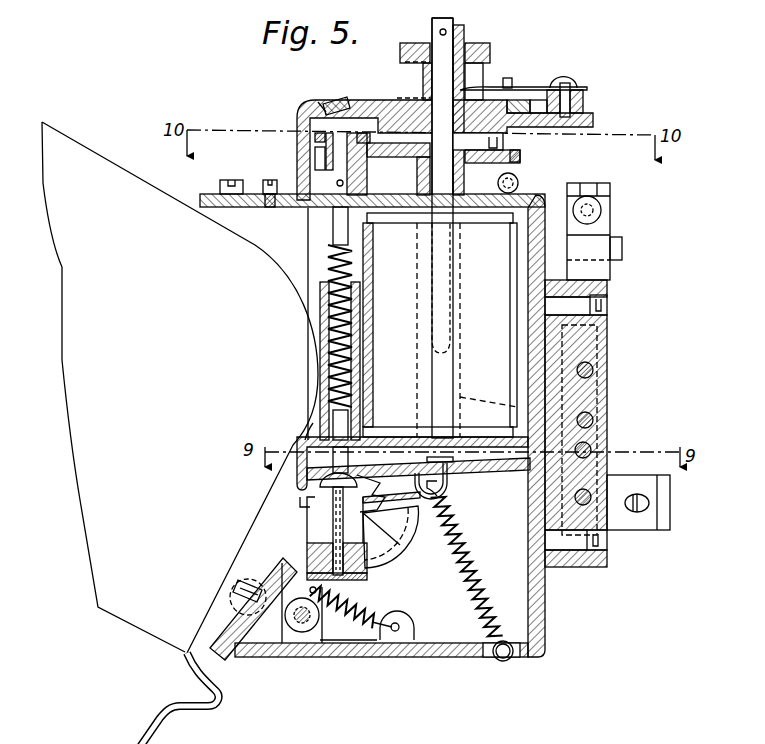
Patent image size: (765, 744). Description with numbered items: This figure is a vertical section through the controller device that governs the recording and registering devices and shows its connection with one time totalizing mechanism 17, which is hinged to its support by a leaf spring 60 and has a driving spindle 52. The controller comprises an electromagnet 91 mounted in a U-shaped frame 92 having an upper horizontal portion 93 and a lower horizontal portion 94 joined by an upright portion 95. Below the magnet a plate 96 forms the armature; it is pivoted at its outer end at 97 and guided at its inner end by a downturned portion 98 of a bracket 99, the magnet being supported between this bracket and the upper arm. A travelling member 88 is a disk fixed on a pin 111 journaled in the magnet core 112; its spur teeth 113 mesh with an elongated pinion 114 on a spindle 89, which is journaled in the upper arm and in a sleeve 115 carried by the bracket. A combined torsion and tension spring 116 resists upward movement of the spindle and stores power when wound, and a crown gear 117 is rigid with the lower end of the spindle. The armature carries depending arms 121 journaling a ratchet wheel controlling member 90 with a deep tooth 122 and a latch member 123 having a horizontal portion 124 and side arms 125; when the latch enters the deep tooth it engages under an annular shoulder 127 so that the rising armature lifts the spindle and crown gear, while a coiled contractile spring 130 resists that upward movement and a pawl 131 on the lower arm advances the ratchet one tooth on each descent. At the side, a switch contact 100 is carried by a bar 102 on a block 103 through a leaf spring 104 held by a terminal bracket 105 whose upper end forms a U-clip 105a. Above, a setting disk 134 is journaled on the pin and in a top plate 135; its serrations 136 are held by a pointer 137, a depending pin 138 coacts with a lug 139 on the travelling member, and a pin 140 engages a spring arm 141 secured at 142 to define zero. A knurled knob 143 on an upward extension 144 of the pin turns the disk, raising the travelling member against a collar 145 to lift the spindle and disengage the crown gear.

The time totalizing mechanism 17 is at (180, 387).
The leaf spring 60 is at (207, 710).
The driving spindle 52 is at (267, 587).
The travelling member 88 is at (508, 149).
The spindle 89 is at (340, 212).
The controlling member 90 is at (308, 508).
The electromagnet 91 is at (490, 380).
The U-shaped frame 92 is at (515, 650).
The upper horizontal portion of frame 93 is at (247, 210).
The lower horizontal portion of frame 94 is at (443, 655).
The upright portion of frame 95 is at (542, 612).
The armature plate 96 is at (463, 473).
The pivot of armature plate 97 is at (530, 468).
The downturned portion of bracket 98 is at (297, 458).
The bracket 99 is at (312, 423).
The contact 100 is at (605, 210).
The bar 102 is at (600, 230).
The block 103 is at (600, 340).
The leaf spring 104 is at (608, 302).
The terminal bracket 105 is at (655, 503).
The U-clip 105a is at (625, 250).
The pin 111 is at (470, 78).
The core 112 is at (600, 405).
The spur teeth 113 is at (518, 160).
The elongated pinion 114 is at (315, 157).
The sleeve 115 is at (323, 410).
The combined torsion and tension spring 116 is at (327, 353).
The crown gear 117 is at (367, 574).
The depending arms 121 is at (377, 492).
The deep tooth 122 is at (378, 513).
The latch member 123 is at (392, 542).
The horizontal portion of latch member 124 is at (450, 505).
The side arms of latch member 125 is at (397, 540).
The annular shoulder 127 is at (317, 487).
The coiled contractile spring 130 is at (465, 552).
The pawl 131 is at (305, 530).
The disk 134 is at (530, 88).
The top plate 135 is at (300, 116).
The serrations 136 is at (348, 99).
The pointer 137 is at (326, 104).
The depending pin 138 is at (478, 141).
The lug 139 is at (500, 143).
The pin 140 is at (508, 80).
The spring arm 141 is at (548, 82).
The securing point of spring arm 142 is at (575, 86).
The knurled knob 143 is at (400, 50).
The shaft 144 is at (455, 28).
The collar 145 is at (364, 135).